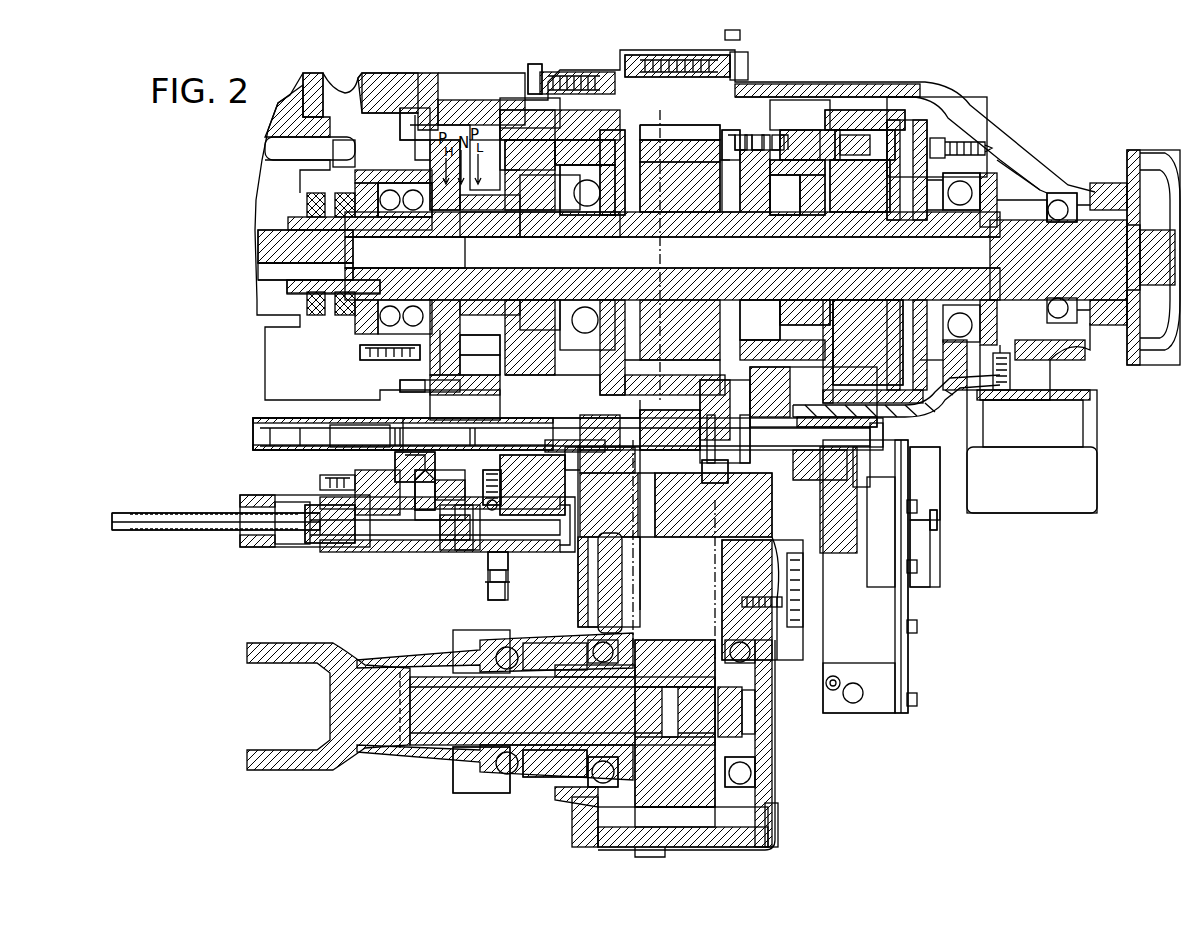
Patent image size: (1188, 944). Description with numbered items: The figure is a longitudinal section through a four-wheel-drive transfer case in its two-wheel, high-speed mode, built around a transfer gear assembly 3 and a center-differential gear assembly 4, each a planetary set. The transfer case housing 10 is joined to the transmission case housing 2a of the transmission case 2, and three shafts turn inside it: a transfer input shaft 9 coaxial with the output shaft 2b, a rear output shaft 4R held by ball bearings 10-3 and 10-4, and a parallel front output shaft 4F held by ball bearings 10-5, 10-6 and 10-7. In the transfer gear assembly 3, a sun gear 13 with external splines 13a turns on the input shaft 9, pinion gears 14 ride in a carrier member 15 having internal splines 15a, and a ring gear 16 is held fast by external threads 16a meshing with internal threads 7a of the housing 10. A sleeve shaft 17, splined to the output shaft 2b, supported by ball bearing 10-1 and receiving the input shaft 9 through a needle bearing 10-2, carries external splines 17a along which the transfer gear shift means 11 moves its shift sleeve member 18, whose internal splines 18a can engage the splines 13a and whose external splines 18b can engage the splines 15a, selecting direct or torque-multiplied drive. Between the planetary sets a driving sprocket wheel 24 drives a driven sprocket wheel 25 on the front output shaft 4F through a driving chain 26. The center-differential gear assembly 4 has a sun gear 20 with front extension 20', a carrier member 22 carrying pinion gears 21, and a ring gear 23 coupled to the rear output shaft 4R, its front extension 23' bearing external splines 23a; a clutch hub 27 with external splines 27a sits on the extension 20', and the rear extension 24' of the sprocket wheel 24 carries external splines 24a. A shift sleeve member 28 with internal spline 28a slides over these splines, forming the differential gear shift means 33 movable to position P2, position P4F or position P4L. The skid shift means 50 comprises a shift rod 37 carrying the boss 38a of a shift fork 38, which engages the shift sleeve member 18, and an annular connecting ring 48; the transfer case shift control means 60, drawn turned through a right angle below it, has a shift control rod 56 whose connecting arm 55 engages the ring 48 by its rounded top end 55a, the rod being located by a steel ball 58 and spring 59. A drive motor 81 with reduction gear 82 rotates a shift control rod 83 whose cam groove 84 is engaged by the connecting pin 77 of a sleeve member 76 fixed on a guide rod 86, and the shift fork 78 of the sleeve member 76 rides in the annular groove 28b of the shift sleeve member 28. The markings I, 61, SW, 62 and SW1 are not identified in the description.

The transmission case 2 is at (316, 63).
The transmission case housing 2a is at (385, 73).
The output shaft 2b is at (265, 247).
The transfer input shaft 9 is at (262, 270).
The sleeve shaft 17 is at (283, 288).
The external splines 17a is at (415, 115).
The transfer gear shift means 11 is at (446, 140).
The internal splines 15a is at (515, 140).
The transfer gear assembly 3 is at (508, 110).
The ring gear 16 is at (523, 108).
The internal threads 7a is at (540, 85).
The pinion gears 14 is at (562, 140).
The external threads 16a is at (586, 150).
The carrier member 15 is at (602, 130).
The transfer case housing 10 is at (690, 55).
The section line I is at (738, 40).
The driving sprocket wheel 24 is at (676, 158).
The rear extension 24' is at (680, 136).
The external splines 24a is at (728, 138).
The four-wheel differential-free position P4F is at (748, 128).
The four-wheel differential-locked position P4L is at (766, 128).
The two-wheel drive position P2 is at (783, 128).
The differential gear shift means 33 is at (782, 105).
The external splines 27a is at (809, 129).
The shift sleeve member 28 is at (812, 160).
The external splines 23a is at (838, 125).
The front extension 23' is at (865, 107).
The ring gear 23 is at (860, 124).
The pinion gears 21 is at (873, 125).
The center-differential gear assembly 4 is at (885, 110).
The carrier member 22 is at (930, 100).
The internal spline 28a is at (795, 195).
The front extension 20' is at (760, 276).
The clutch hub 27 is at (805, 277).
The sun gear 20 is at (868, 307).
The needle bearing 10-2 is at (405, 252).
The external splines 13a is at (490, 238).
The sun gear 13 is at (570, 238).
The ball bearing 10-4 is at (1059, 205).
The ball bearing 10-3 is at (972, 195).
The rear output shaft 4R is at (1130, 315).
The ball bearing 10-1 is at (372, 322).
The shift sleeve member 18 is at (368, 342).
The internal splines 18a is at (475, 348).
The external splines 18b is at (475, 369).
The shift fork 38 is at (422, 386).
The boss 38a is at (462, 425).
The guide rod 86 is at (676, 430).
The shift fork 78 is at (718, 405).
The annular groove 28b is at (813, 397).
The shift rod 37 is at (255, 438).
The skid shift means 50 is at (305, 460).
The annular connecting ring 48 is at (402, 460).
The rounded top end 55a is at (440, 458).
The spring 59 is at (482, 497).
The connecting pin 77 is at (702, 464).
The sleeve member 76 is at (755, 490).
The control cable 61 is at (165, 535).
The transfer case shift control means 60 is at (321, 570).
The shift control rod 56 is at (360, 550).
The connecting arm 55 is at (405, 520).
The steel ball 58 is at (478, 525).
The switch SW is at (490, 598).
The lever housing 62 is at (545, 558).
The cam groove 84 is at (672, 540).
The shift control rod 83 is at (720, 540).
The switch SW1 is at (940, 527).
The reduction gear 82 is at (932, 563).
The drive motor 81 is at (912, 660).
The ball bearing 10-6 is at (748, 777).
The ball bearing 10-5 is at (600, 770).
The ball bearing 10-7 is at (505, 795).
The front output shaft 4F is at (540, 790).
The driving chain 26 is at (660, 835).
The driven sprocket wheel 25 is at (688, 805).